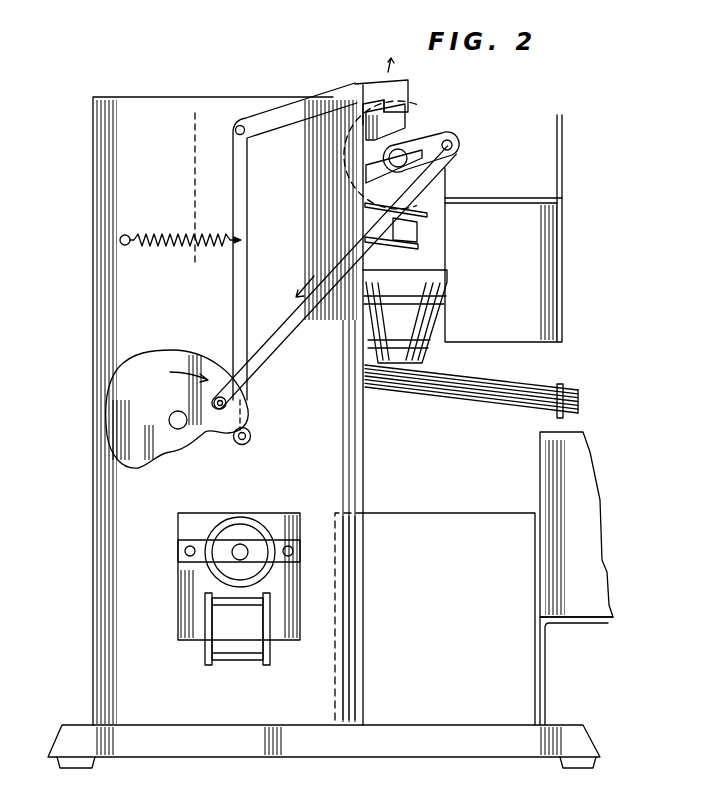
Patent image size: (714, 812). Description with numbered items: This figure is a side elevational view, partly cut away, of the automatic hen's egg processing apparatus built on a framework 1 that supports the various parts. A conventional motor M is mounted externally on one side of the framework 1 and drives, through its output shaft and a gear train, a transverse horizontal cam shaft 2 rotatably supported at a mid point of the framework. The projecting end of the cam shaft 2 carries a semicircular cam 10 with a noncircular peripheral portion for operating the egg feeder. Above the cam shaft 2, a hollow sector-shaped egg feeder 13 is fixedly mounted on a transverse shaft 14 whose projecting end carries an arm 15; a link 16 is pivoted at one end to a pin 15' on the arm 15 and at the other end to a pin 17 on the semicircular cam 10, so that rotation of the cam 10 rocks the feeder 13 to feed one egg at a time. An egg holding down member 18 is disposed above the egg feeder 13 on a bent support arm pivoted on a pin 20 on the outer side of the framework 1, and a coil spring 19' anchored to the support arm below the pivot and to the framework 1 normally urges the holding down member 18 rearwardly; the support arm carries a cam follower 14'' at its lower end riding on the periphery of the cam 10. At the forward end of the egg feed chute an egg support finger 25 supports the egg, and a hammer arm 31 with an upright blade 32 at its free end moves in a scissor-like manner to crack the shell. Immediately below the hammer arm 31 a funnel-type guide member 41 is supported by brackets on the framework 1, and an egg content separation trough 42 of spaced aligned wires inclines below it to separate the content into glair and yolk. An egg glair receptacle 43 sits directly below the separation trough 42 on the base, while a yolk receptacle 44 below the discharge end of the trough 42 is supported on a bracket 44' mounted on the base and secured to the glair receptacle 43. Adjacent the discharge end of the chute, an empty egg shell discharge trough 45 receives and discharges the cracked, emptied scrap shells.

The framework 1 is at (92, 183).
The semicircular cam 10 is at (93, 376).
The transverse shaft 14 is at (295, 244).
The pin 20 is at (240, 126).
The egg holding down member 18 is at (400, 82).
The egg feeder 13 is at (395, 130).
The arm 15 is at (439, 140).
The pin 15' is at (483, 147).
The link 16 is at (272, 350).
The pin 17 is at (221, 410).
The cam shaft 2 is at (178, 430).
The roller 14'' is at (273, 438).
The coil spring 19' is at (180, 266).
The motor M is at (255, 524).
The egg support finger 25 is at (420, 208).
The upright blade 32 is at (418, 232).
The arm 31 is at (391, 254).
The empty egg shell discharge trough 45 is at (563, 216).
The funnel-type guide member 41 is at (430, 308).
The egg content separation trough 42 is at (462, 396).
The egg glair receptacle 43 is at (449, 512).
The yolk receptacle 44 is at (595, 524).
The bracket 44' is at (586, 671).